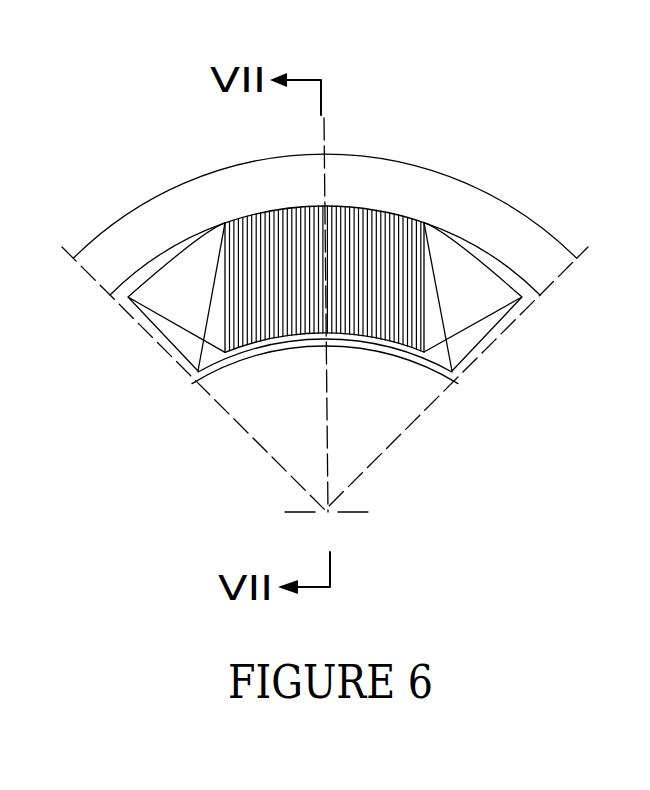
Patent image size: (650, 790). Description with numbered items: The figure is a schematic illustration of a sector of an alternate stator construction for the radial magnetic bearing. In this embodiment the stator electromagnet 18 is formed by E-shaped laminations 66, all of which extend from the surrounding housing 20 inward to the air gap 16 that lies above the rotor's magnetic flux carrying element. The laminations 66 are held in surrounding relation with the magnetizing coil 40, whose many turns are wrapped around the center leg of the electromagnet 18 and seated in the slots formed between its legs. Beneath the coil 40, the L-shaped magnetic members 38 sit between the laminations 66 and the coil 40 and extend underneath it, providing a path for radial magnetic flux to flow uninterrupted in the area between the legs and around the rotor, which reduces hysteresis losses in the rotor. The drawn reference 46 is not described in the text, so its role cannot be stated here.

The air gap 16 is at (237, 362).
The stator electromagnet 18 is at (367, 203).
The housing 20 is at (443, 191).
The magnetic member 38 is at (197, 390).
The magnetizing coil 40 is at (182, 324).
The stator sector 46 is at (372, 425).
The E-shaped laminations 66 is at (247, 224).